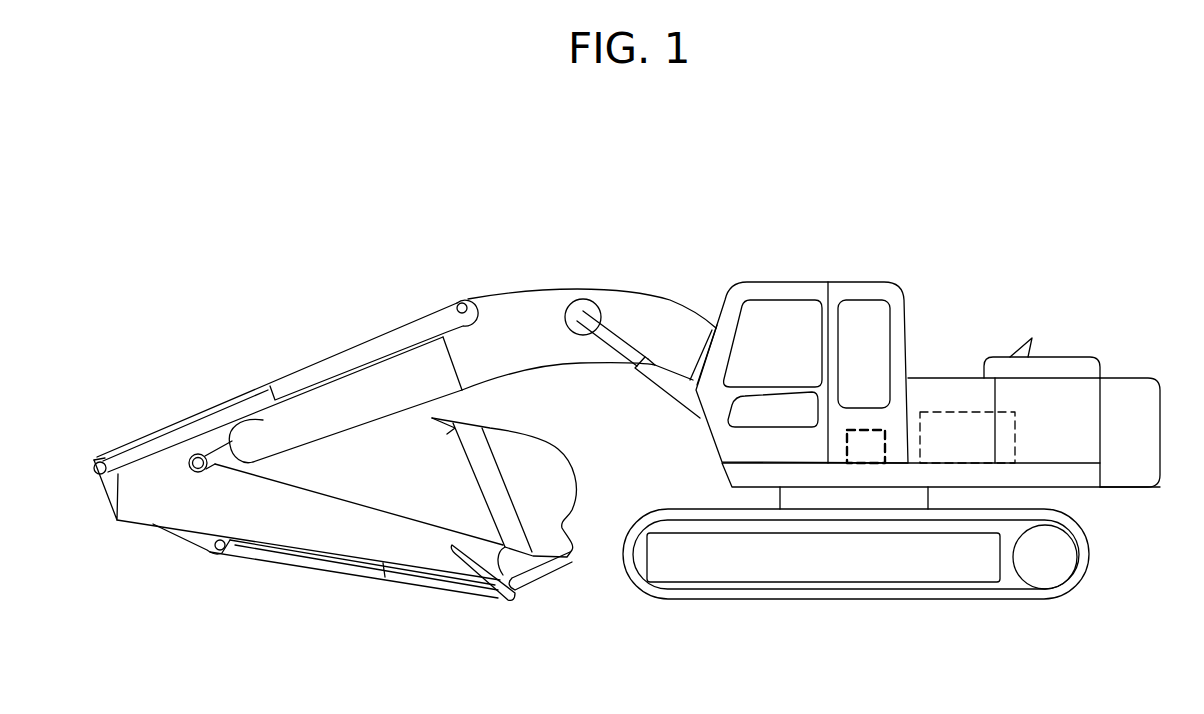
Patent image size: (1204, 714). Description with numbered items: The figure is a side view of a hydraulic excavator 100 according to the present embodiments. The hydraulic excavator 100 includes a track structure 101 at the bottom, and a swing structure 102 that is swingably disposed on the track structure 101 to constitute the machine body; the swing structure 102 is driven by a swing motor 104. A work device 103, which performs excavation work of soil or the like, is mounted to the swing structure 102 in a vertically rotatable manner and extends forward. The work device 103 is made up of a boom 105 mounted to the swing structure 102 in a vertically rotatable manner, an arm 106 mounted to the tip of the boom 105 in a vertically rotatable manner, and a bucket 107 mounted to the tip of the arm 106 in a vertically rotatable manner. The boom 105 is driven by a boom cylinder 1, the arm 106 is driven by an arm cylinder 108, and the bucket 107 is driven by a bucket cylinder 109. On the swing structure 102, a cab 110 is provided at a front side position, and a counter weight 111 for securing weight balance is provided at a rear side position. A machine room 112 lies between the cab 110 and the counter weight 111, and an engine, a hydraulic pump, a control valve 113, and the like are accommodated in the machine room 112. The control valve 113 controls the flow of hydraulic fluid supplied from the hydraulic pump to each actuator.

The hydraulic excavator 100 is at (612, 197).
The track structure 101 is at (763, 594).
The swing structure 102 is at (948, 376).
The work device 103 is at (658, 296).
The swing motor 104 is at (872, 457).
The boom 105 is at (552, 307).
The arm 106 is at (143, 512).
The bucket 107 is at (508, 429).
The arm cylinder 108 is at (343, 352).
The bucket cylinder 109 is at (330, 587).
The cab 110 is at (782, 282).
The counter weight 111 is at (1135, 378).
The machine room 112 is at (1070, 357).
The control valve 113 is at (1003, 453).
The boom cylinder 1 is at (665, 392).